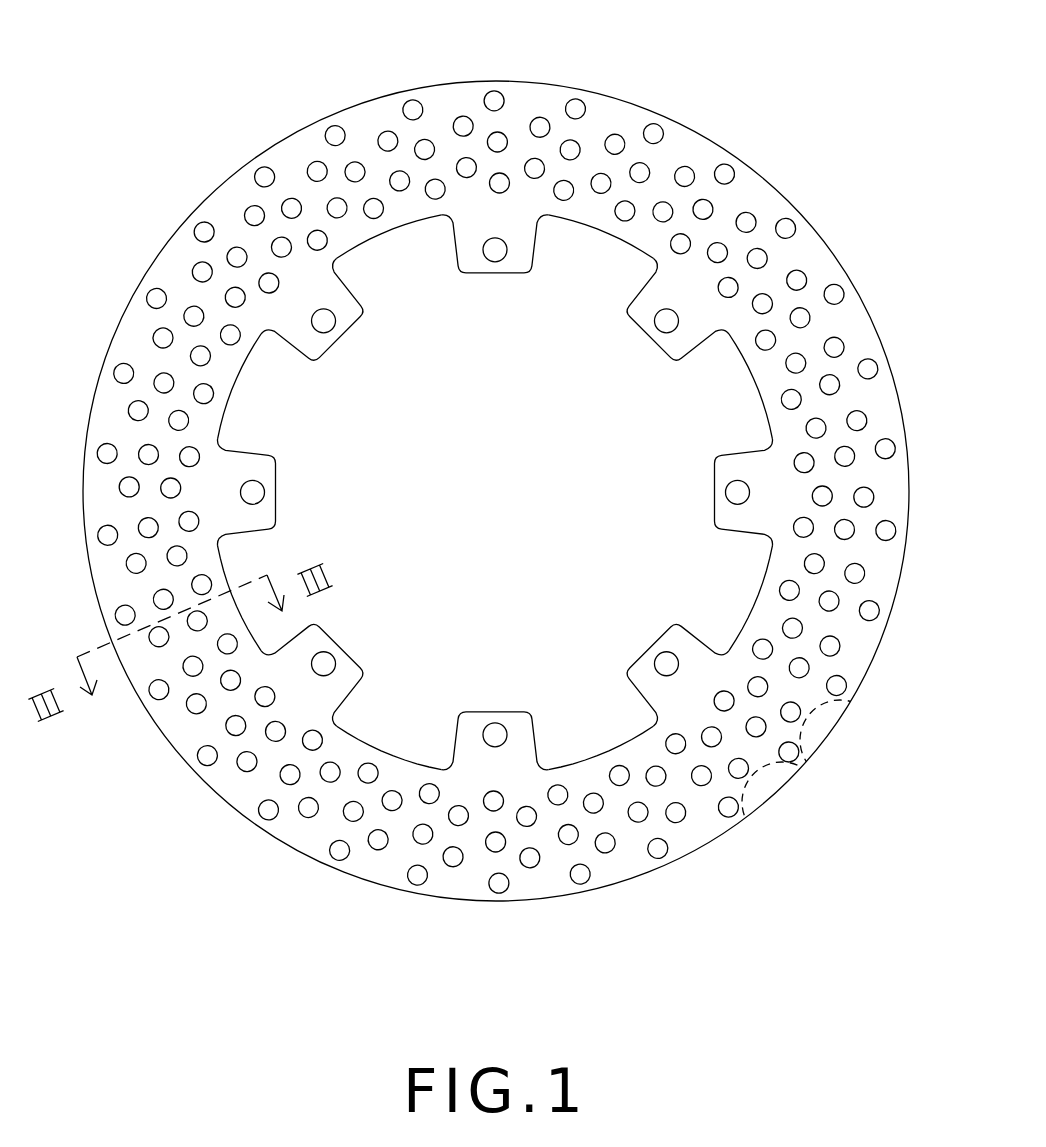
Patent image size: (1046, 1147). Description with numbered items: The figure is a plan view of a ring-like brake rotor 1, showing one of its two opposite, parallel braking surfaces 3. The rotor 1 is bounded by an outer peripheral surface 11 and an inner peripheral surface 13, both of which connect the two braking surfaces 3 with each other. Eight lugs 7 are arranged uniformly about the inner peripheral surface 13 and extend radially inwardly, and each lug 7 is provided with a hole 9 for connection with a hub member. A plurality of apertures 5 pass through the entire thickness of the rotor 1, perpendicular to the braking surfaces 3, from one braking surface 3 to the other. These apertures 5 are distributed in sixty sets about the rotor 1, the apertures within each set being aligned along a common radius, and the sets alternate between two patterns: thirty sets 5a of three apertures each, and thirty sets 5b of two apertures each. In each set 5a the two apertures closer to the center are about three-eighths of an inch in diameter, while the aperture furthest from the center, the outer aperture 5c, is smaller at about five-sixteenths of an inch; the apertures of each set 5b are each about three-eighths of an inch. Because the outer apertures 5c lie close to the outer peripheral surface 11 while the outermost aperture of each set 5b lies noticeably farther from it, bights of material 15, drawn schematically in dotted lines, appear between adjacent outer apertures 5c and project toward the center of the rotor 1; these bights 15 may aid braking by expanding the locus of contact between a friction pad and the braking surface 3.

The brake rotor 1 is at (496, 451).
The braking surface 3 is at (496, 451).
The apertures 5 is at (499, 183).
The sets of three apertures 5a is at (887, 532).
The sets of two apertures 5b is at (855, 577).
The outer aperture 5c is at (869, 373).
The lug 7 is at (312, 348).
The hole 9 is at (325, 322).
The outer peripheral surface 11 is at (332, 115).
The inner peripheral surface 13 is at (233, 392).
The bight of material 15 is at (825, 728).